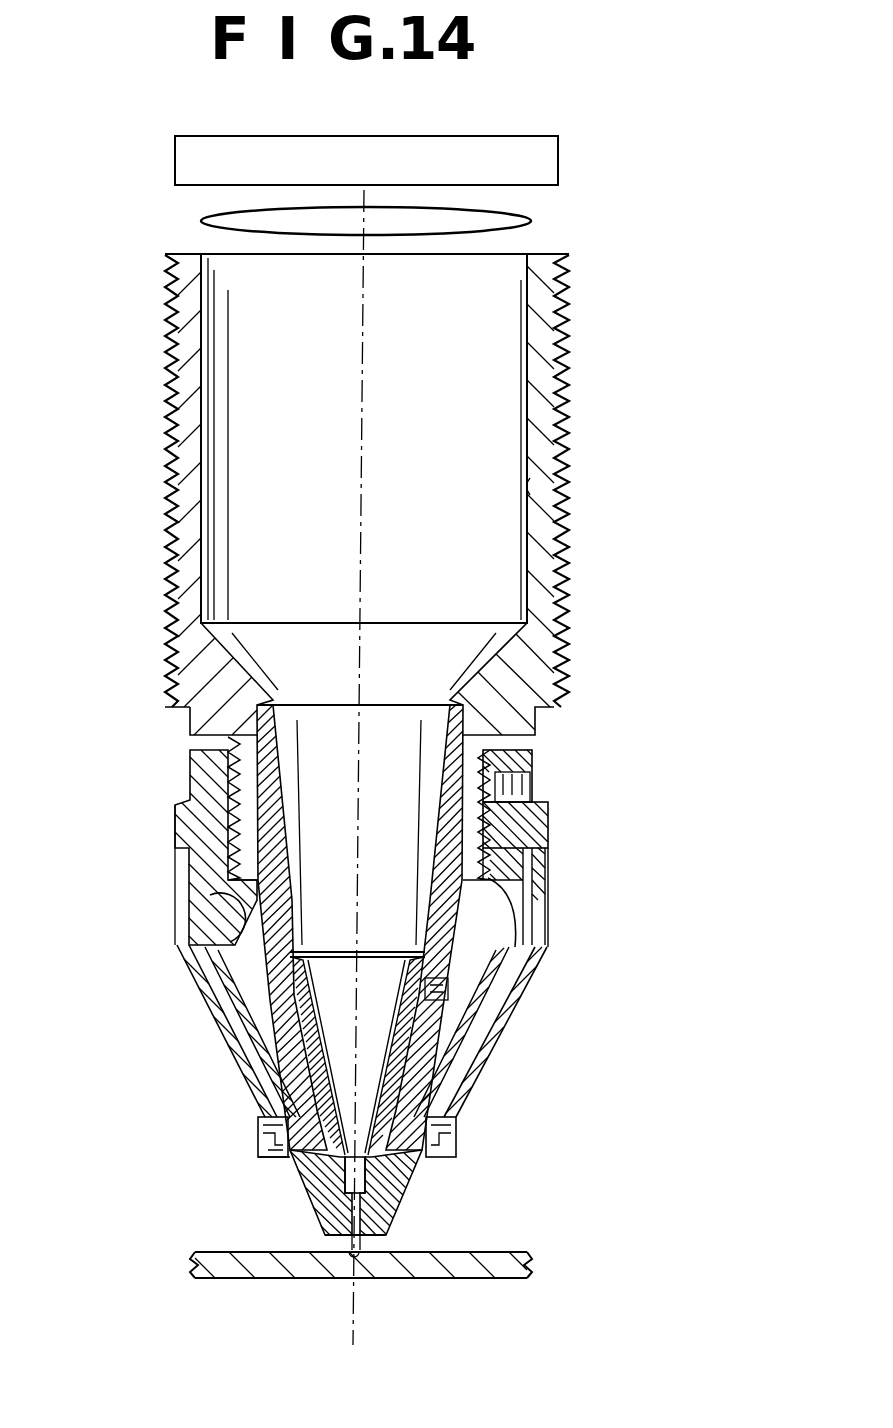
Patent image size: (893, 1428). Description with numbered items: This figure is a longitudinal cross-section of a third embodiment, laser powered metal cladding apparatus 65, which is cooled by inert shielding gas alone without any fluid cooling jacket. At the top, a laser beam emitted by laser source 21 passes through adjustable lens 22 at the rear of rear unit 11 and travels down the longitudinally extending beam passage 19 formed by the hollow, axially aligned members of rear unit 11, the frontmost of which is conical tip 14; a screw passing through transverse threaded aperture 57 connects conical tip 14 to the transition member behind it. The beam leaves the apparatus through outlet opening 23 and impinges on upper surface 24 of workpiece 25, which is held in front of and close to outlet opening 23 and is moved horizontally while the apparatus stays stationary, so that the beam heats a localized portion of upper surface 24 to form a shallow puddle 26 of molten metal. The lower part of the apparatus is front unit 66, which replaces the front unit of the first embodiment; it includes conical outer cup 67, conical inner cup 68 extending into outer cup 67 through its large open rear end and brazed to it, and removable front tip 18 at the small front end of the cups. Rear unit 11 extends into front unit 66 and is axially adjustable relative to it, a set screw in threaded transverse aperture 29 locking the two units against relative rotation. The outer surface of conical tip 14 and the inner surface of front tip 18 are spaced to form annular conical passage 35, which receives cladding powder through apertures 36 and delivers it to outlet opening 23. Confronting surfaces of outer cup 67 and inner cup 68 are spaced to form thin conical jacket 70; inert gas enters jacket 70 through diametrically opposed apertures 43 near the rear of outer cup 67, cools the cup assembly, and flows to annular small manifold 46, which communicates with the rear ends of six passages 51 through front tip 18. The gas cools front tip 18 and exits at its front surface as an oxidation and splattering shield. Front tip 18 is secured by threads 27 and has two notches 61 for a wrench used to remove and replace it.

The rear unit 11 is at (165, 468).
The conical tip 14 is at (387, 1040).
The removable front tip 18 is at (310, 1197).
The beam passage 19 is at (530, 490).
The laser source 21 is at (562, 160).
The adjustable lens 22 is at (535, 222).
The outlet opening 23 is at (357, 1242).
The upper surface 24 is at (512, 1252).
The workpiece 25 is at (280, 1278).
The puddle 26 is at (363, 1272).
The threads 27 is at (456, 1145).
The threaded transverse aperture 29 is at (532, 790).
The annular conical passage 35 is at (222, 960).
The apertures 36 is at (187, 834).
The apertures 43 is at (548, 880).
The small manifold 46 is at (275, 1125).
The passages 51 is at (390, 1188).
The transverse threaded aperture 57 is at (455, 995).
The notches 61 is at (290, 1160).
The laser powered metal cladding apparatus 65 is at (574, 375).
The front unit 66 is at (240, 1070).
The outer cup 67 is at (587, 1048).
The inner cup 68 is at (233, 990).
The conical jacket 70 is at (430, 1100).